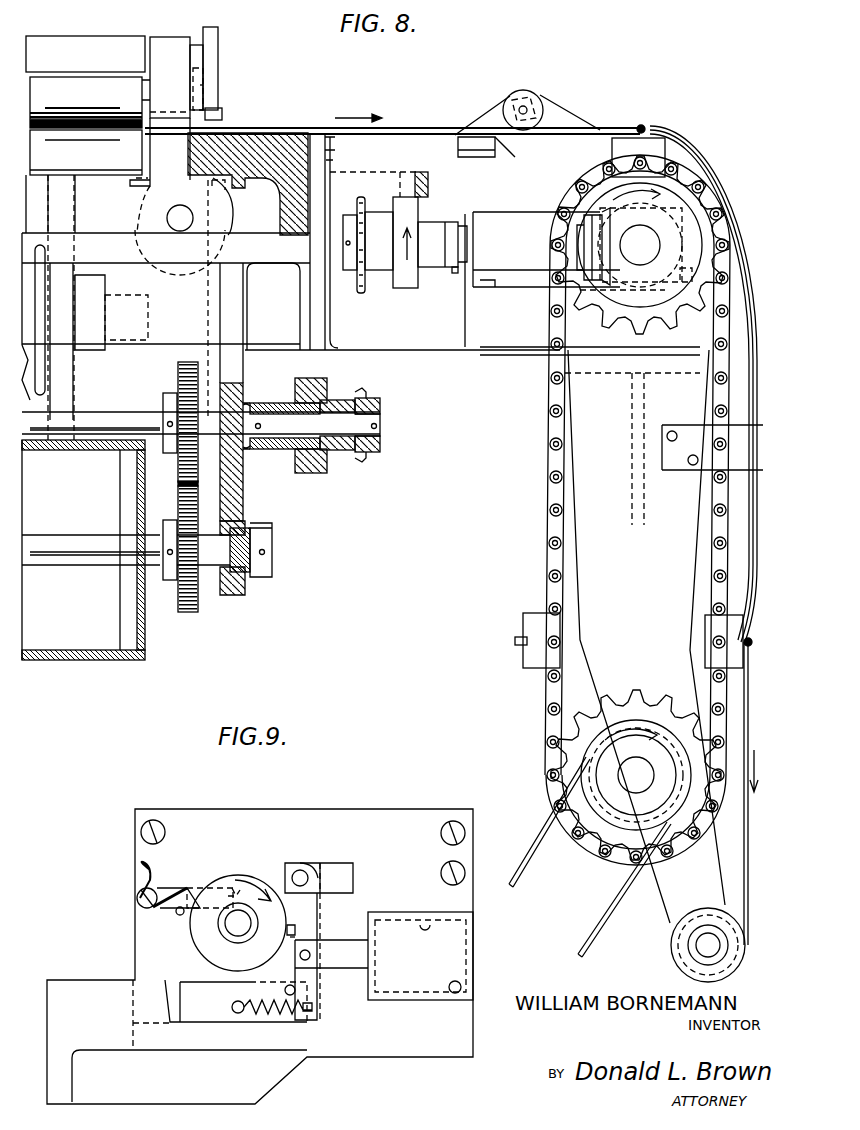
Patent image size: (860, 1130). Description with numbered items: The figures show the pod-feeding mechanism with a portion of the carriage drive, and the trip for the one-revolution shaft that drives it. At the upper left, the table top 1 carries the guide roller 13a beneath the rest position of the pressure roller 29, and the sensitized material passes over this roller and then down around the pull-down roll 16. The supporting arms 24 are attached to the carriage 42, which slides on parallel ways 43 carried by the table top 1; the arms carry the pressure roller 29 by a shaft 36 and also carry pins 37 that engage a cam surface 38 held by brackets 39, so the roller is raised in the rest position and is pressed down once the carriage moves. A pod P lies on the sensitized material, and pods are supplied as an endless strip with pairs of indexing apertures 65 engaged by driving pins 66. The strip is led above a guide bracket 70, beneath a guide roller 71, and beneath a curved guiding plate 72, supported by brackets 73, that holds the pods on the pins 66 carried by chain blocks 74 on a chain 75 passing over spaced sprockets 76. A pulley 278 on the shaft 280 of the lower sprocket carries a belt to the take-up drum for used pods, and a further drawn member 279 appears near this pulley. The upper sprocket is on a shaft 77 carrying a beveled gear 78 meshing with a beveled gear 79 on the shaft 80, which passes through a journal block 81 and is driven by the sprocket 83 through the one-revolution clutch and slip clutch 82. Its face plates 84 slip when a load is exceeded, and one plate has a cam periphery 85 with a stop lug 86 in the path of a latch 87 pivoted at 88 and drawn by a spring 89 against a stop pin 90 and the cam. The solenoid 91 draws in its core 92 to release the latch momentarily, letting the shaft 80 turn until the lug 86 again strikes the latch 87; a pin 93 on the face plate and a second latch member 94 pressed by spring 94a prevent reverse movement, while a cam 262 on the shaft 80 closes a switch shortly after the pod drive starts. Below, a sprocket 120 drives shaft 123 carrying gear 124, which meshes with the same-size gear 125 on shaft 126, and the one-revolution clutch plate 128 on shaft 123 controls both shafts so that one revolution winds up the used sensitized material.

In FIG. 8, the table top 1 is at (268, 172).
In FIG. 8, the guide roller 13a is at (86, 152).
In FIG. 8, the pull-down roll 16 is at (108, 662).
In FIG. 8, the supporting arms 24 is at (215, 36).
In FIG. 8, the pressure roller 29 is at (85, 82).
In FIG. 8, the shaft 36 is at (146, 95).
In FIG. 8, the pins 37 is at (196, 48).
In FIG. 8, the cam surface 38 is at (200, 68).
In FIG. 8, the brackets 39 is at (208, 112).
In FIG. 8, the carriage 42 is at (220, 214).
In FIG. 8, the parallel ways 43 is at (170, 214).
In FIG. 8, the indexing apertures 65 is at (748, 660).
In FIG. 8, the driving pins 66 is at (645, 124).
In FIG. 8, the guide bracket 70 is at (478, 158).
In FIG. 8, the guide roller 71 is at (540, 102).
In FIG. 8, the curved guiding plate 72 is at (735, 158).
In FIG. 8, the brackets 73 is at (680, 472).
In FIG. 8, the chain blocks 74 is at (612, 157).
In FIG. 8, the chain 75 is at (548, 474).
In FIG. 8, the sprockets 76 is at (608, 312).
In FIG. 8, the shaft 77 is at (640, 245).
In FIG. 8, the beveled gear 78 is at (650, 285).
In FIG. 8, the beveled gear 79 is at (614, 215).
In FIG. 8, the shaft 80 is at (470, 214).
In FIG. 9, the shaft 80 is at (234, 928).
In FIG. 8, the journal block 81 is at (529, 222).
In FIG. 8, the one-revolution clutch and slip clutch 82 is at (406, 278).
In FIG. 8, the sprocket 83 is at (361, 293).
In FIG. 8, the face plates 84 is at (421, 290).
In FIG. 9, the face plates 84 is at (220, 956).
In FIG. 8, the cam periphery 85 is at (423, 210).
In FIG. 9, the cam periphery 85 is at (258, 882).
In FIG. 9, the stop lug 86 is at (295, 918).
In FIG. 9, the latch 87 is at (296, 936).
In FIG. 9, the pivot 88 is at (302, 870).
In FIG. 9, the spring 89 is at (272, 1020).
In FIG. 9, the stop pin 90 is at (288, 988).
In FIG. 9, the solenoid 91 is at (420, 956).
In FIG. 9, the core 92 is at (332, 962).
In FIG. 9, the pin 93 is at (237, 890).
In FIG. 9, the second latch member 94 is at (195, 888).
In FIG. 9, the spring 94a is at (142, 870).
In FIG. 8, the sprocket 120 is at (366, 460).
In FIG. 8, the shaft 123 is at (102, 426).
In FIG. 8, the gear 124 is at (178, 380).
In FIG. 8, the gear 125 is at (183, 612).
In FIG. 8, the shaft 126 is at (90, 546).
In FIG. 8, the one-revolution clutch plate 128 is at (298, 470).
In FIG. 8, the cam 262 is at (458, 274).
In FIG. 8, the pulley 278 is at (585, 758).
In FIG. 8, the rod 279 is at (536, 858).
In FIG. 8, the shaft 280 is at (636, 775).
In FIG. 8, the pod P is at (404, 130).